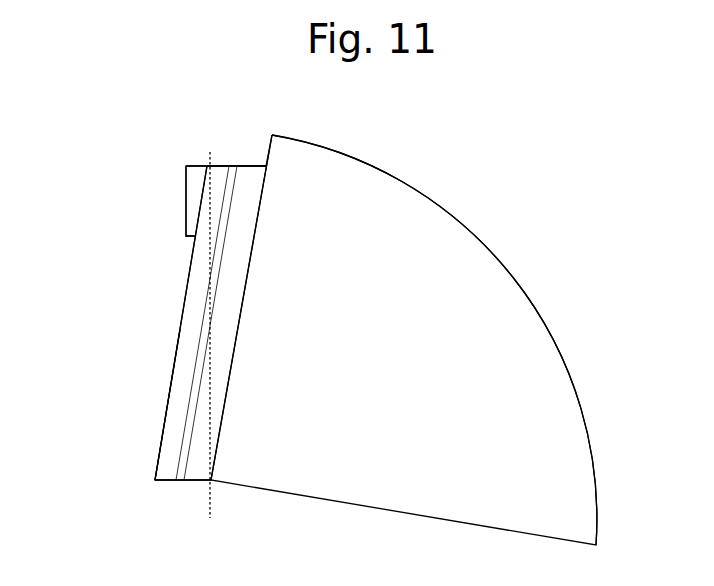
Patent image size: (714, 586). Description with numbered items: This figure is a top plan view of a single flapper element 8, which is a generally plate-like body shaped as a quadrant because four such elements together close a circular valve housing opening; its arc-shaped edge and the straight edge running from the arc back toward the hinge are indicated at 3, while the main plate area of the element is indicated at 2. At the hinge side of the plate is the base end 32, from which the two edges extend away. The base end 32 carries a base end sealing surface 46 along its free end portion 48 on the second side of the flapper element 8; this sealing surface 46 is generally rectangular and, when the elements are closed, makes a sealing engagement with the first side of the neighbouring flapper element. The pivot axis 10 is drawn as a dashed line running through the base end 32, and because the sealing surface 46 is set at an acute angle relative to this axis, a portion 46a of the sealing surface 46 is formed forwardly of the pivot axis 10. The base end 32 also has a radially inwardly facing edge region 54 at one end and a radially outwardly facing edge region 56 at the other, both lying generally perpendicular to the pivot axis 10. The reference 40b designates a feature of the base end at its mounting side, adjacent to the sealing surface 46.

The rotor blade 2 is at (523, 433).
The blade edge 3 is at (415, 203).
The flapper element 8 is at (570, 245).
The pivot axis 10 is at (212, 507).
The base end 32 is at (153, 315).
The side face 40b is at (183, 382).
The base end sealing surface 46 is at (173, 455).
The radially outward portion of the base end sealing surface 46a is at (223, 182).
The free end portion 48 is at (183, 267).
The radially inwardly facing edge region 54 is at (173, 482).
The radially outwardly facing edge region 56 is at (219, 166).